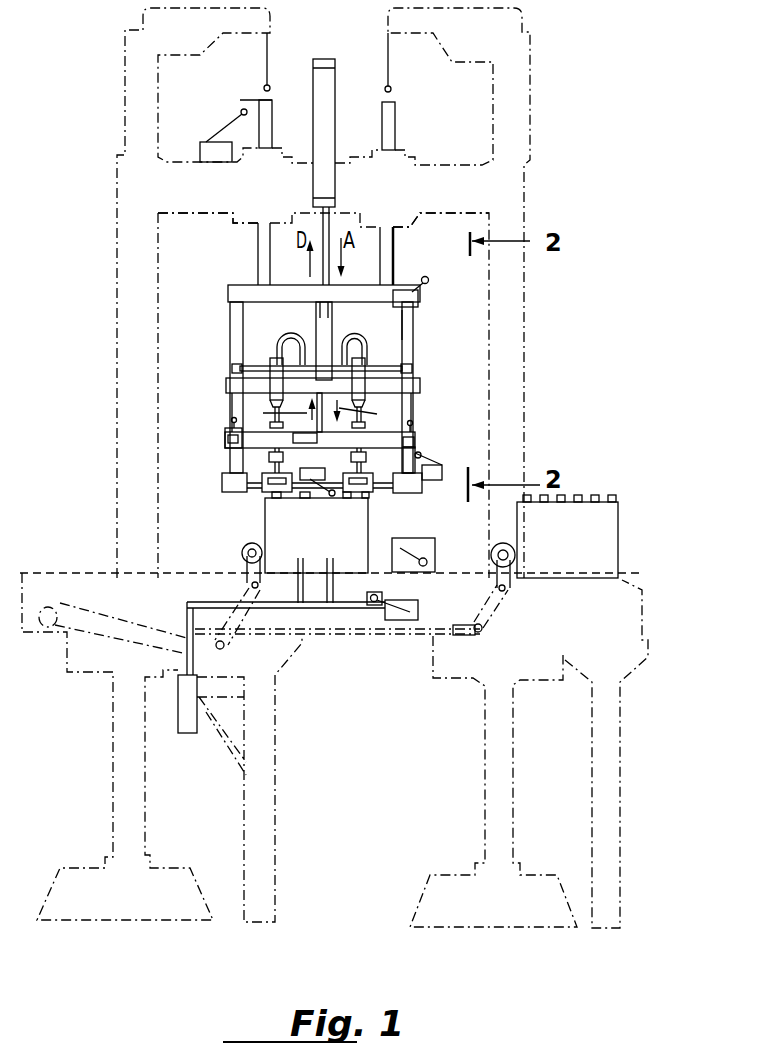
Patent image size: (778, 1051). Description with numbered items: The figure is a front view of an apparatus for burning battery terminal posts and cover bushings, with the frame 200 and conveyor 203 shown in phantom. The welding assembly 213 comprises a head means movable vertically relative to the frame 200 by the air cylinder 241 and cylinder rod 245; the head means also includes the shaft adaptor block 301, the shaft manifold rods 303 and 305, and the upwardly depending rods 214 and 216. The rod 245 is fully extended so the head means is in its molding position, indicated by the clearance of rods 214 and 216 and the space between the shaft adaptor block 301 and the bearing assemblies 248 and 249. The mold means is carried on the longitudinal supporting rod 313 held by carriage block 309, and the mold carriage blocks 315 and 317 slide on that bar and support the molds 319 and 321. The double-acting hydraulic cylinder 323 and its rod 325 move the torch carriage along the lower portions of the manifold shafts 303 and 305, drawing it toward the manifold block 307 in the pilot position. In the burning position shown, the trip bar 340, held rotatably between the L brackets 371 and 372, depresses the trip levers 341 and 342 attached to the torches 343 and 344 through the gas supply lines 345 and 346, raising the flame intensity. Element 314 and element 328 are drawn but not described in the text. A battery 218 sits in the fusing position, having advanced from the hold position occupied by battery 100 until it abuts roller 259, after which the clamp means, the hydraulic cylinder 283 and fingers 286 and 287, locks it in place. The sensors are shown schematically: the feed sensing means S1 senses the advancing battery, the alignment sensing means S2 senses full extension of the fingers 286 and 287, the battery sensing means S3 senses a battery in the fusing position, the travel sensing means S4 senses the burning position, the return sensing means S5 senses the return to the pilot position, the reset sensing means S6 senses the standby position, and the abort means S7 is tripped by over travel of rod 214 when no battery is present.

The battery 100 is at (582, 545).
The frame 200 is at (545, 187).
The conveyor 203 is at (650, 578).
The welding assembly 213 is at (329, 403).
The upwardly depending rod 214 is at (192, 529).
The upwardly depending rod 216 is at (389, 250).
The battery 218 is at (316, 560).
The air cylinder 241 is at (318, 83).
The cylinder rod 245 is at (326, 230).
The bearing assembly 248 is at (240, 225).
The bearing assembly 249 is at (420, 220).
The roller 259 is at (243, 553).
The hydraulic cylinder 283 is at (187, 722).
The finger 286 is at (305, 592).
The finger 287 is at (333, 586).
The shaft adaptor block 301 is at (228, 295).
The shaft manifold rod 303 is at (232, 312).
The shaft manifold rod 305 is at (420, 306).
The manifold block 307 is at (228, 391).
The carriage block 309 is at (222, 485).
The longitudinal supporting rod 313 is at (386, 496).
The bracket 314 is at (416, 522).
The mold carriage block 315 is at (265, 493).
The mold carriage block 317 is at (408, 540).
The mold 319 is at (283, 483).
The mold 321 is at (364, 492).
The hydraulic cylinder 323 is at (324, 321).
The rod 325 is at (421, 390).
The nozzle rod 328 is at (275, 463).
The trip bar 340 is at (413, 338).
The trip lever 341 is at (233, 401).
The trip lever 342 is at (403, 392).
The torch 343 is at (272, 362).
The torch 344 is at (361, 361).
The gas supply line 345 is at (291, 342).
The gas supply line 346 is at (352, 341).
The L bracket 371 is at (233, 370).
The L bracket 372 is at (410, 368).
The feed sensing means S1 is at (433, 552).
The alignment sensing means S2 is at (413, 621).
The battery sensing means S3 is at (313, 482).
The travel sensing means S4 is at (443, 466).
The return sensing means S5 is at (310, 434).
The reset sensing means S6 is at (426, 297).
The abort means S7 is at (208, 152).